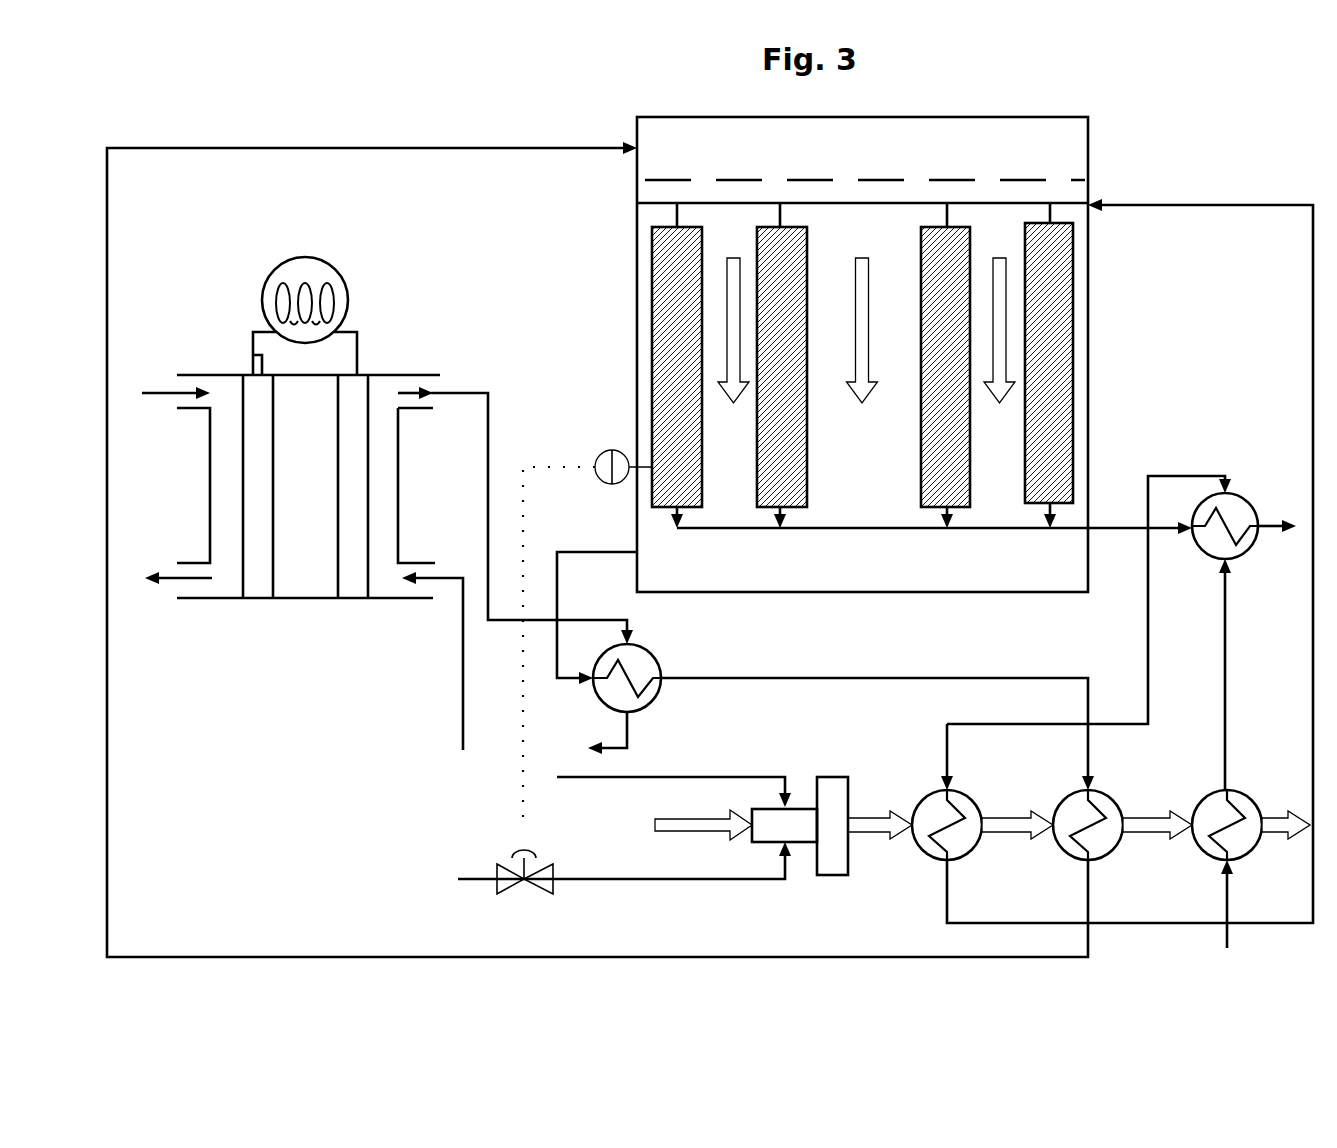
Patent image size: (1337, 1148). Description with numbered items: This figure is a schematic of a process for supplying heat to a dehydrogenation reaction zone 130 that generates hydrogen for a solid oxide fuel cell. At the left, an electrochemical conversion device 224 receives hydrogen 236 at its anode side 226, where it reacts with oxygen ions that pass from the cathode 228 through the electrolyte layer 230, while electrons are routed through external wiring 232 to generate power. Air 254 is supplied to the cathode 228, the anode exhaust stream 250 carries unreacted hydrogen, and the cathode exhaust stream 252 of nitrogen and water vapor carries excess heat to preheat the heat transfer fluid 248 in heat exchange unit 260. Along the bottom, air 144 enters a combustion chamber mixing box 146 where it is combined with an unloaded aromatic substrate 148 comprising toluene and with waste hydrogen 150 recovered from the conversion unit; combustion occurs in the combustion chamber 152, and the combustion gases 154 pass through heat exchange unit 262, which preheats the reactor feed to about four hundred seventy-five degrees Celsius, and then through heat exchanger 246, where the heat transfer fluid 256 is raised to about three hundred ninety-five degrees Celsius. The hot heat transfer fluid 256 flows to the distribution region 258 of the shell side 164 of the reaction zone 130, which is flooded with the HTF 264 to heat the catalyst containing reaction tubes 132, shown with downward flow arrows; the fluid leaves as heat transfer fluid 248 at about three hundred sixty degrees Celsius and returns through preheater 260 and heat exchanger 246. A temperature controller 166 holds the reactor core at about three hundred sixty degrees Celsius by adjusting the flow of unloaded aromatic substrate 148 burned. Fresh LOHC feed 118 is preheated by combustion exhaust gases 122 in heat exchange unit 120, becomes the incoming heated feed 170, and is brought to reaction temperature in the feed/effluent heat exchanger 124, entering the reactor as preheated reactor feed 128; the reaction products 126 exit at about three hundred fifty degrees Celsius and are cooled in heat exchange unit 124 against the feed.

The fresh LOHC feed 118 is at (1222, 882).
The heat exchange unit 120 is at (1252, 852).
The combustion exhaust gases 122 is at (1022, 832).
The feed/effluent heat exchanger 124 is at (1242, 490).
The reaction products 126 is at (1105, 525).
The preheated reactor feed 128 is at (1252, 207).
The dehydrogenation reaction zone 130 is at (1094, 157).
The catalyst containing reaction tubes 132 is at (670, 297).
The air 144 is at (700, 820).
The combustion chamber mixing box 146 is at (773, 842).
The unloaded aromatic substrate 148 is at (670, 880).
The waste hydrogen 150 is at (648, 778).
The combustion chamber 152 is at (848, 875).
The combustion gases 154 is at (873, 815).
The shell side 164 is at (879, 239).
The temperature controller 166 is at (604, 452).
The incoming heated feed 170 is at (1225, 715).
The electrochemical conversion device 224 is at (388, 365).
The anode side 226 is at (253, 583).
The cathode 228 is at (355, 588).
The electrolyte layer 230 is at (307, 583).
The external wiring 232 is at (255, 332).
The hydrogen 236 is at (168, 392).
The heat exchanger 246 is at (1115, 800).
The heat transfer fluid 248 is at (598, 552).
The anode exhaust stream 250 is at (172, 580).
The cathode exhaust stream 252 is at (472, 392).
The air 254 is at (463, 697).
The heat transfer fluid 256 is at (383, 957).
The distribution region 258 is at (897, 156).
The heat exchange unit 260 is at (660, 660).
The heat exchange unit 262 is at (983, 812).
The HTF 264 is at (737, 258).